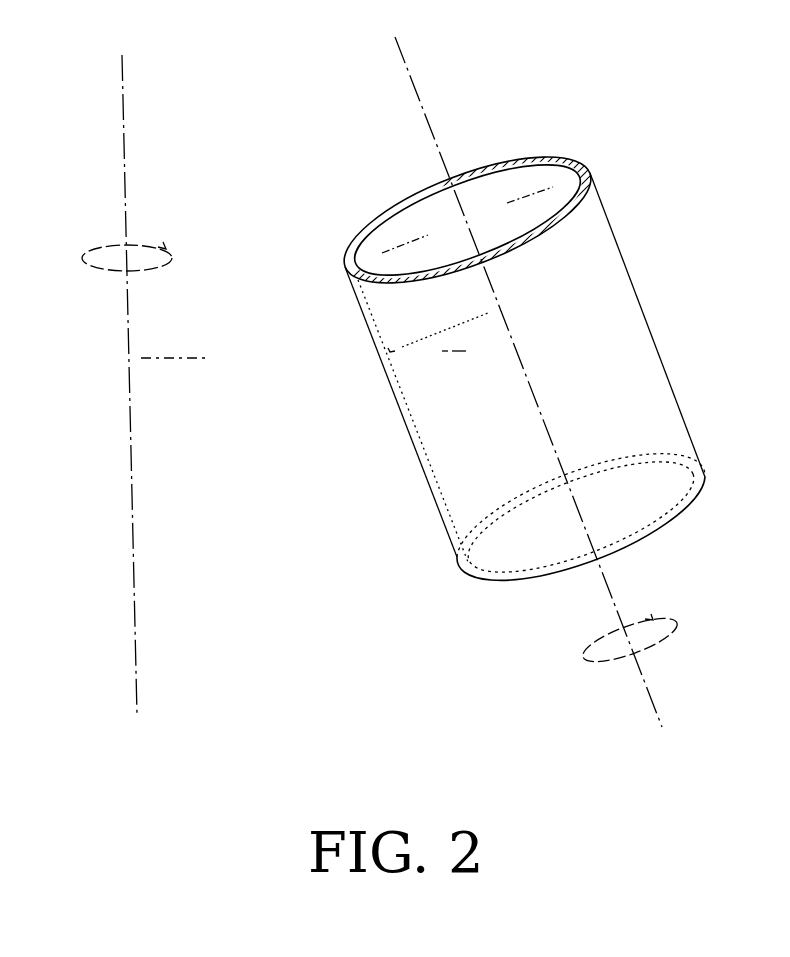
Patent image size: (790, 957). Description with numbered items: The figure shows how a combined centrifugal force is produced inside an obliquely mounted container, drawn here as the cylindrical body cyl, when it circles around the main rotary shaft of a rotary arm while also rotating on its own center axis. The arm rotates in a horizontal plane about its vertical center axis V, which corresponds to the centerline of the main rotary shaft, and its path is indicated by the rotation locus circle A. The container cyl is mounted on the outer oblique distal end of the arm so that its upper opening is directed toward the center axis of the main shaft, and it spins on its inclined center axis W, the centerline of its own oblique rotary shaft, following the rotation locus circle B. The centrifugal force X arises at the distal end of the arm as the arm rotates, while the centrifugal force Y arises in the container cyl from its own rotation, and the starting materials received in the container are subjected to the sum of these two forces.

The vertical center axis V is at (121, 367).
The inclined center axis W is at (512, 364).
The rotation locus circle of the rotary arm A is at (108, 252).
The rotation locus circle of the container B is at (610, 645).
The centrifugal force X is at (303, 367).
The centrifugal force Y is at (467, 267).
The cylindrical body cyl is at (517, 363).